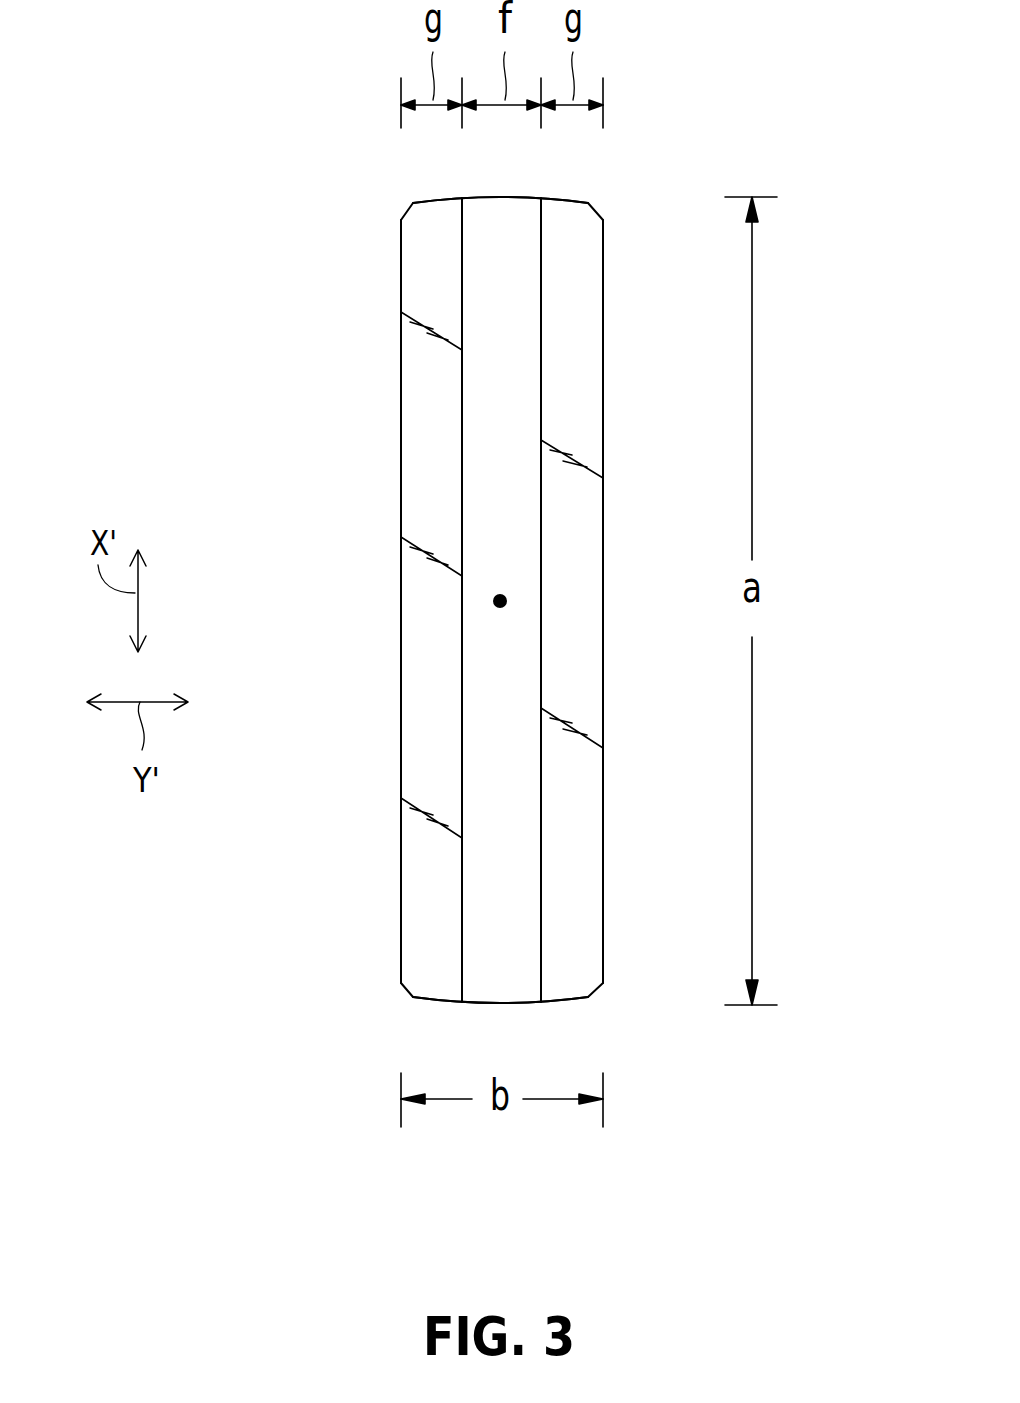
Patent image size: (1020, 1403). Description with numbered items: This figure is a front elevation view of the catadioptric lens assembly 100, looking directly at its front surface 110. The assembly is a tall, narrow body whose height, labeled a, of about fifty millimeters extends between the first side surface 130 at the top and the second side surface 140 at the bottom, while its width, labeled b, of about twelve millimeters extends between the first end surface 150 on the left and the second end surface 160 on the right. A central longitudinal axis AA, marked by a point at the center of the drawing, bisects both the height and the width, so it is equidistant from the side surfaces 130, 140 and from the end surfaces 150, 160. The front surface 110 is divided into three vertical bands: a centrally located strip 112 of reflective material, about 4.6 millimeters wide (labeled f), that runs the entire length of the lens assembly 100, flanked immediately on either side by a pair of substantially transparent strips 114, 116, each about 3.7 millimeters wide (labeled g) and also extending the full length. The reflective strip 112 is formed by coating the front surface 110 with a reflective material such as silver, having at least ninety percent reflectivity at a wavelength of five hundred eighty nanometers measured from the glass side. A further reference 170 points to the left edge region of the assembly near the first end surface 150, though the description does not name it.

The lens assembly 100 is at (228, 233).
The front surface 110 is at (445, 639).
The strip of reflective material 112 is at (517, 532).
The transparent strip 114 is at (415, 386).
The transparent strip 116 is at (587, 277).
The first side surface 130 is at (502, 197).
The second side surface 140 is at (498, 1003).
The first end surface 150 is at (401, 488).
The second end surface 160 is at (603, 402).
The outer edge region 170 is at (385, 714).
The central longitudinal axis AA is at (507, 600).